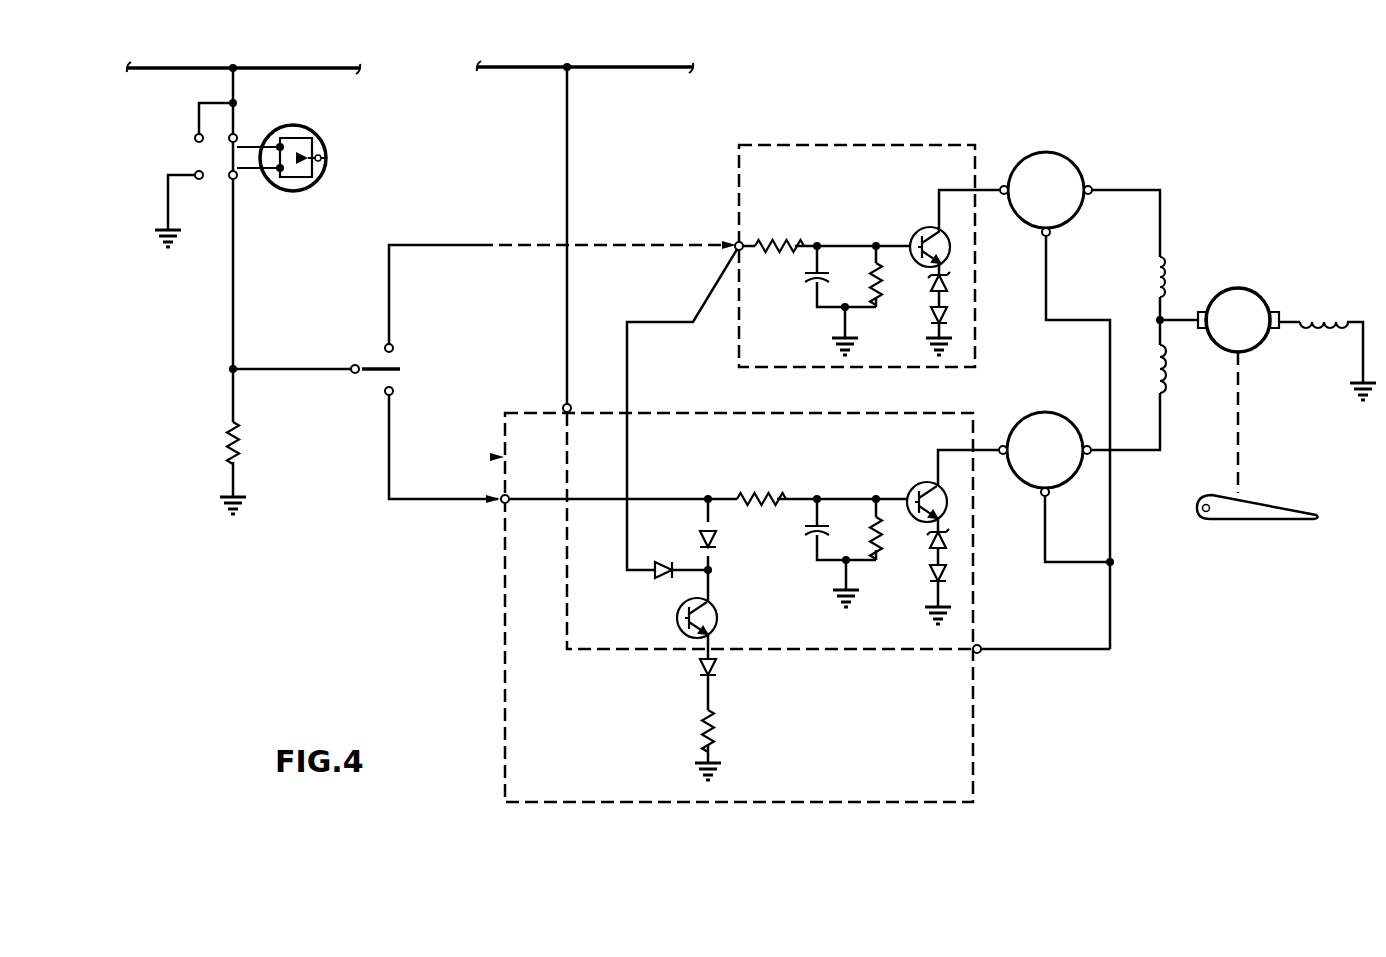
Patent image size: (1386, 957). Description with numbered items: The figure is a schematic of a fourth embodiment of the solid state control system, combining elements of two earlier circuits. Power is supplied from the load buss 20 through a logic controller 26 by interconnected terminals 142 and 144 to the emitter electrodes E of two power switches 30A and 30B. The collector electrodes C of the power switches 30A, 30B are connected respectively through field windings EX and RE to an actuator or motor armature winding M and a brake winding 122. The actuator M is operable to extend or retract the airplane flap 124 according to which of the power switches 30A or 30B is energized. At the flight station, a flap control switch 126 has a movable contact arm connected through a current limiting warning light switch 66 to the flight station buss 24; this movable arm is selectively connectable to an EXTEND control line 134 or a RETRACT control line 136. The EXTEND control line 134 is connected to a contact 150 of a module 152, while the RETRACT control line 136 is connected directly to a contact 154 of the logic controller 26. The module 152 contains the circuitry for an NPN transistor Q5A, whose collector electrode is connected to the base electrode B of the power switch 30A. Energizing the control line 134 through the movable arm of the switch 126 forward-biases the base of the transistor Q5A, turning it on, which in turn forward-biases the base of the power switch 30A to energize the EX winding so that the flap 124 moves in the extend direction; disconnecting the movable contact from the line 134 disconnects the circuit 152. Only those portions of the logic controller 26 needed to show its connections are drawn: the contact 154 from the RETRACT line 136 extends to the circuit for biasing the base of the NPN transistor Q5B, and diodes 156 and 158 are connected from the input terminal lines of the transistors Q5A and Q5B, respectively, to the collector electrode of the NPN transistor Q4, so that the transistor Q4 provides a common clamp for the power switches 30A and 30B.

The flight station buss 24 is at (300, 50).
The current limiting warning light switch 66 is at (327, 158).
The flap control switch 126 is at (375, 364).
The EXTEND control line 134 is at (389, 270).
The RETRACT control line 136 is at (389, 463).
The load buss 20 is at (615, 48).
The terminal 142 is at (570, 405).
The logic controller 26 is at (495, 457).
The contact 154 is at (503, 504).
The module 152 is at (841, 256).
The contact 150 is at (736, 242).
The diode 156 is at (696, 538).
The diode 158 is at (656, 582).
The terminal 144 is at (980, 653).
The power switch 30A is at (1058, 154).
The power switch 30B is at (1028, 485).
The brake winding 122 is at (1326, 321).
The airplane flap 124 is at (1272, 508).
The NPN transistor Q4 is at (717, 613).
The NPN transistor Q5A is at (916, 232).
The NPN transistor Q5B is at (910, 490).
The field winding EX is at (1166, 270).
The field winding RE is at (1166, 380).
The actuator or motor armature winding M is at (1238, 320).